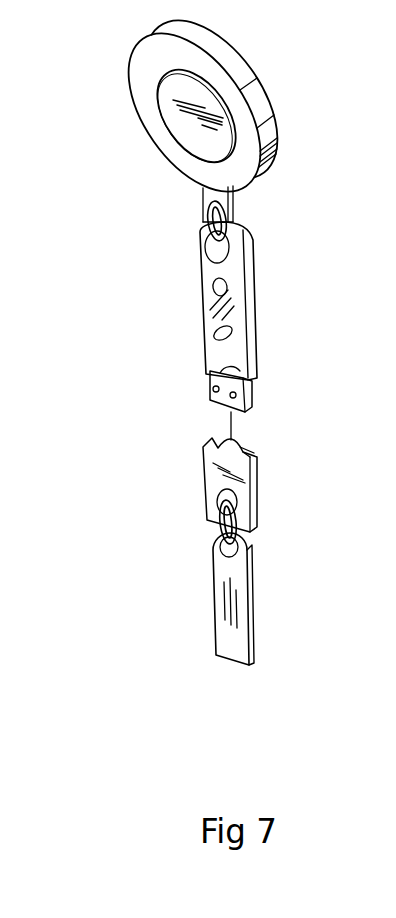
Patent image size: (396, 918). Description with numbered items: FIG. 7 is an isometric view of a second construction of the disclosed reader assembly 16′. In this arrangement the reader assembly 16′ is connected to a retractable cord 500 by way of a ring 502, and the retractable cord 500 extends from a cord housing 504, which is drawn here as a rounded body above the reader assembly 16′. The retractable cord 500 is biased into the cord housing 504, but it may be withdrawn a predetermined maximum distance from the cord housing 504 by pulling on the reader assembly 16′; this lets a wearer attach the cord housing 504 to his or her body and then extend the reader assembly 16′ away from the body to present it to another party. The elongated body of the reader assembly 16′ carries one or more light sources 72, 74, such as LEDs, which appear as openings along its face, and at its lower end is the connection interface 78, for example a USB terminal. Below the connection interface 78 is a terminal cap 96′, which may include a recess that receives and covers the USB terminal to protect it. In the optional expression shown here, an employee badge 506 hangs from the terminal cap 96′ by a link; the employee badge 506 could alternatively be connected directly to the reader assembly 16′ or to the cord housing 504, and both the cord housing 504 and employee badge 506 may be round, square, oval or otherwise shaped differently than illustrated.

The cord housing 504 is at (168, 148).
The retractable cord 500 is at (237, 205).
The ring 502 is at (205, 222).
The reader assembly 16′ is at (250, 298).
The light source 72 is at (210, 291).
The light source 74 is at (212, 337).
The connection interface 78 is at (258, 397).
The terminal cap 96′ is at (202, 487).
The employee badge 506 is at (212, 600).